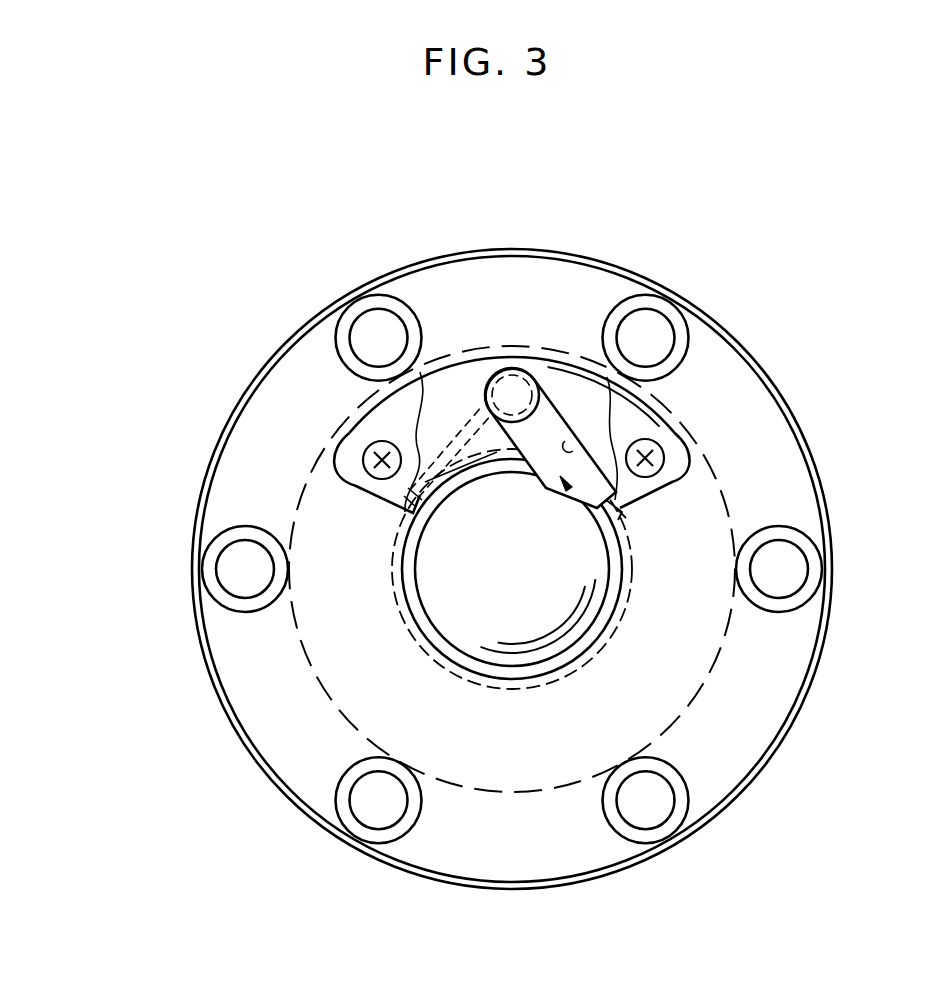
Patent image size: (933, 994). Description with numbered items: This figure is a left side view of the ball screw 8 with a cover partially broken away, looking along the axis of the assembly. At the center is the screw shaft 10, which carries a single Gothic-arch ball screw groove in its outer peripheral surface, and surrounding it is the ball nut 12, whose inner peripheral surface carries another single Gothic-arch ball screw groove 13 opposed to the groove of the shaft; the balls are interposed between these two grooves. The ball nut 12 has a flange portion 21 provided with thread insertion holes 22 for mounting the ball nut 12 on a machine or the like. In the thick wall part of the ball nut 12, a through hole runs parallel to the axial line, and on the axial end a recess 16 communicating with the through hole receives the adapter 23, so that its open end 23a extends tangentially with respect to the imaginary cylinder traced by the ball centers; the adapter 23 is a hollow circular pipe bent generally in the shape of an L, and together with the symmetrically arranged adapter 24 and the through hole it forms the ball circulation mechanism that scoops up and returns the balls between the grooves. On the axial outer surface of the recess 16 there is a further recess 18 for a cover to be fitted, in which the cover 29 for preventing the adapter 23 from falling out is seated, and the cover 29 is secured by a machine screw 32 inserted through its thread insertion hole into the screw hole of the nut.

The ball screw 8 is at (640, 197).
The screw shaft 10 is at (433, 582).
The ball nut 12 is at (818, 677).
The ball screw groove 13 is at (418, 633).
The recess 16 is at (580, 455).
The recess for cover 18 is at (541, 372).
The flange portion 21 is at (212, 498).
The thread insertion hole 22 is at (227, 572).
The adapter 23 is at (562, 405).
The open end 23a is at (622, 518).
The adapter 24 is at (468, 408).
The cover 29 is at (388, 423).
The machine screw 32 is at (362, 460).